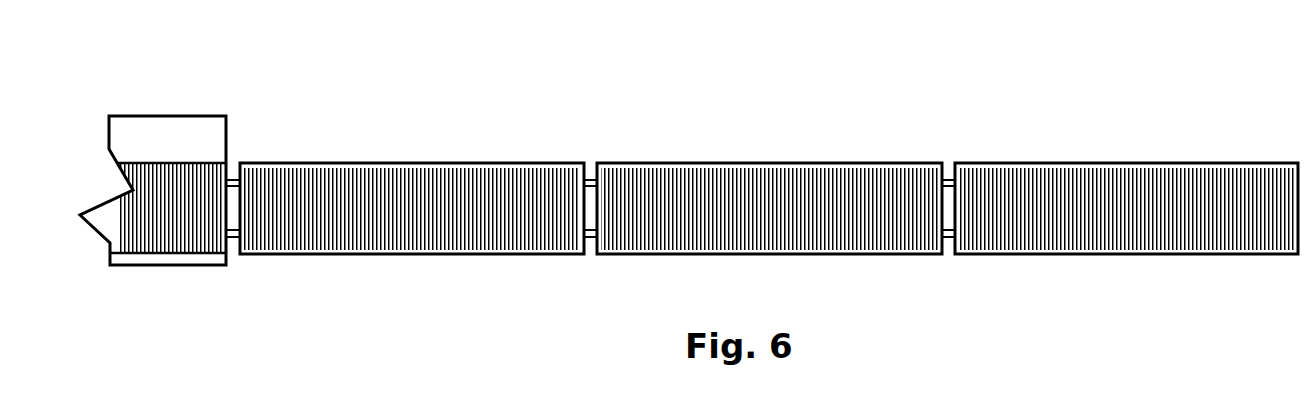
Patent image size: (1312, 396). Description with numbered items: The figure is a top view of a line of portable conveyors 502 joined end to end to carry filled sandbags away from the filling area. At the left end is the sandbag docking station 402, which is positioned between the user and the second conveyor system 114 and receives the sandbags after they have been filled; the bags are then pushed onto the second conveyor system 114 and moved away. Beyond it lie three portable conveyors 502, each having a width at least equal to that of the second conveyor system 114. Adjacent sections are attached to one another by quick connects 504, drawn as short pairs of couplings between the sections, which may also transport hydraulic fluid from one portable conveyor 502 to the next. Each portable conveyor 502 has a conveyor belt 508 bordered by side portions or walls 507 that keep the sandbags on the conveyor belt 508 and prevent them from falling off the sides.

The second conveyor system 114 is at (170, 116).
The sandbag docking station 402 is at (168, 250).
The portable conveyor 502 is at (772, 225).
The quick connect 504 is at (236, 178).
The wall 507 is at (1232, 165).
The conveyor belt 508 is at (1072, 198).